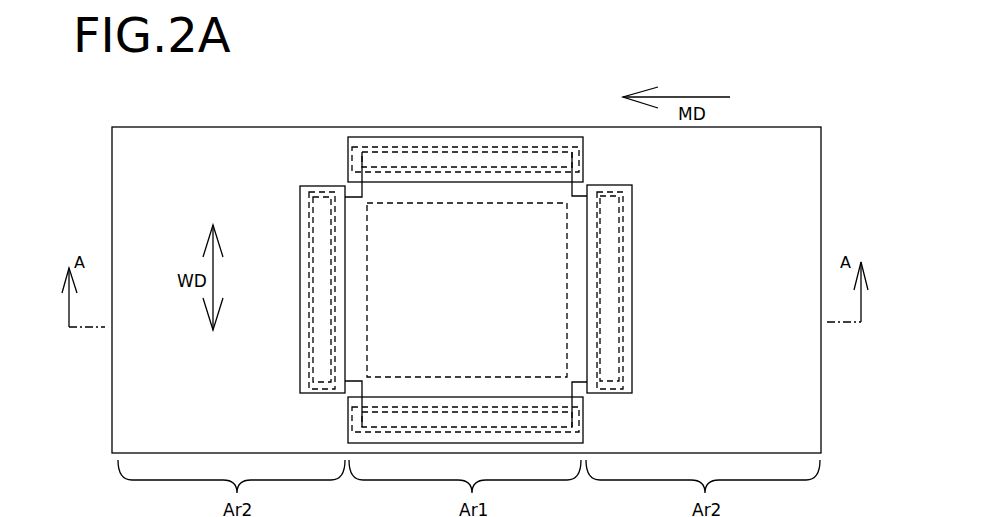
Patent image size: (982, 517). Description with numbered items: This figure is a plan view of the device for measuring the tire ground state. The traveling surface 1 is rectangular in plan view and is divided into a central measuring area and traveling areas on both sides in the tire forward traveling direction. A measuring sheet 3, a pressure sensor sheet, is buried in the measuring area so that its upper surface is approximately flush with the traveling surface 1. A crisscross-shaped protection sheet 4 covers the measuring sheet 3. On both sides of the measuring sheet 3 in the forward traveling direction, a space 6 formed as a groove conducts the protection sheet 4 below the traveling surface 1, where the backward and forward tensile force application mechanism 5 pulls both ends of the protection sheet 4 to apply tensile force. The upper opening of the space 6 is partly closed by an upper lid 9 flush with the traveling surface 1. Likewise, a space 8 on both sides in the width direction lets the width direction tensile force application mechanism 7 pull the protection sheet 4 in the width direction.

The traveling surface 1 is at (777, 168).
The measuring sheet 3 is at (370, 256).
The protection sheet 4 is at (352, 197).
The backward and forward tensile force application mechanism 5 is at (308, 292).
The space 6 is at (313, 393).
The width direction tensile force application mechanism 7 is at (362, 157).
The space 8 is at (590, 157).
The upper lid 9 is at (300, 246).